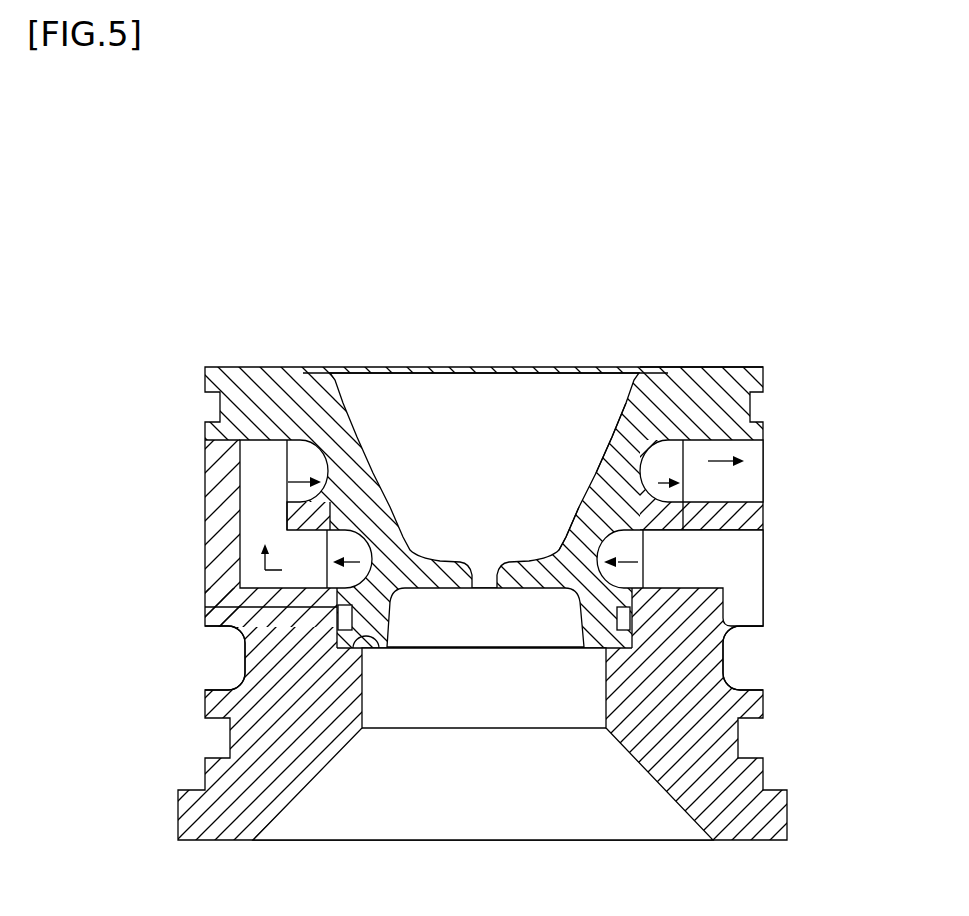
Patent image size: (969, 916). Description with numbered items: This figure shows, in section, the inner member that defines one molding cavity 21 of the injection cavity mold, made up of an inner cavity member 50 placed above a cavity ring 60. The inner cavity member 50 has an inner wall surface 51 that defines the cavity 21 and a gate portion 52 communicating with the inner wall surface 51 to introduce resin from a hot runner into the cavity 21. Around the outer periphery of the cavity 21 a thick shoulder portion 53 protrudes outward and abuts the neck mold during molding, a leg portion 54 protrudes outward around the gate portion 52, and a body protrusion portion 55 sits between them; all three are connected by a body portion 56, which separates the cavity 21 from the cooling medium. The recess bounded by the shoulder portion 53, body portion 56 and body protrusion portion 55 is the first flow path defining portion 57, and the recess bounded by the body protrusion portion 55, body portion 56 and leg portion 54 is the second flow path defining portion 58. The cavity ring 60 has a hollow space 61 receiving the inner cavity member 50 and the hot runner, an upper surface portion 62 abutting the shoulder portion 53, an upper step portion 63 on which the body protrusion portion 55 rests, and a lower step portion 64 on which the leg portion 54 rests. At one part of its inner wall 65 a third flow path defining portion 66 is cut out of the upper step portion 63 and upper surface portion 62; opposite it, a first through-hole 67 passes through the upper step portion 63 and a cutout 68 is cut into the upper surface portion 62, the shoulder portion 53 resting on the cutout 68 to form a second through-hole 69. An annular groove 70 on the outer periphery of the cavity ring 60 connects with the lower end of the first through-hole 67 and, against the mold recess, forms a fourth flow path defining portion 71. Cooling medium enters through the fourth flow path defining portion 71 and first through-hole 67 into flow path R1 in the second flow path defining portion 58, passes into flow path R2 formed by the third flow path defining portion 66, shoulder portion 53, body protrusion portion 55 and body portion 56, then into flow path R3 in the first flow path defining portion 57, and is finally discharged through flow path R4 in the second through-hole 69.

The inner cavity member 50 is at (512, 556).
The inner wall surface 51 is at (608, 425).
The shoulder portion 53 is at (715, 365).
The cavity 21 is at (402, 410).
The body portion 56 is at (620, 455).
The third flow path defining portion 66 is at (253, 440).
The first flow path defining portion 57 is at (320, 467).
The upper step portion 63 is at (320, 507).
The second flow path defining portion 58 is at (360, 542).
The flow path R2 is at (262, 562).
The upper surface portion 62 is at (205, 428).
The inner wall 65 is at (333, 607).
The lower step portion 64 is at (372, 636).
The cutout 68 is at (757, 485).
The second through-hole 69 is at (750, 473).
The flow path R4 is at (717, 455).
The first through-hole 67 is at (720, 562).
The body protrusion portion 55 is at (677, 532).
The flow path R3 is at (305, 497).
The flow path R1 is at (360, 552).
The gate portion 52 is at (512, 592).
The leg portion 54 is at (607, 622).
The hollow space 61 is at (602, 812).
The cavity ring 60 is at (784, 703).
The annular groove 70 is at (493, 664).
The fourth flow path defining portion 71 is at (223, 652).